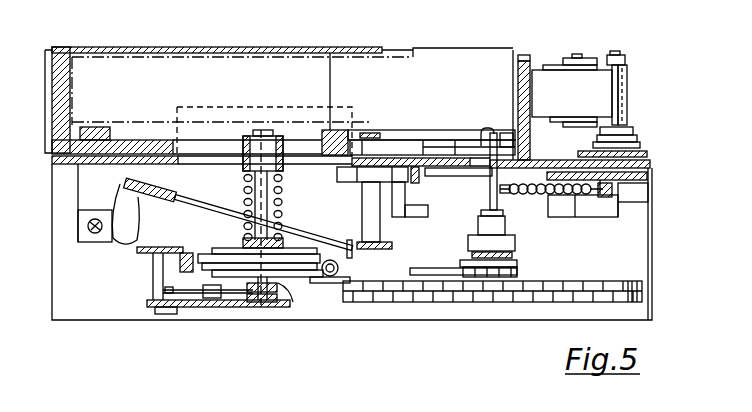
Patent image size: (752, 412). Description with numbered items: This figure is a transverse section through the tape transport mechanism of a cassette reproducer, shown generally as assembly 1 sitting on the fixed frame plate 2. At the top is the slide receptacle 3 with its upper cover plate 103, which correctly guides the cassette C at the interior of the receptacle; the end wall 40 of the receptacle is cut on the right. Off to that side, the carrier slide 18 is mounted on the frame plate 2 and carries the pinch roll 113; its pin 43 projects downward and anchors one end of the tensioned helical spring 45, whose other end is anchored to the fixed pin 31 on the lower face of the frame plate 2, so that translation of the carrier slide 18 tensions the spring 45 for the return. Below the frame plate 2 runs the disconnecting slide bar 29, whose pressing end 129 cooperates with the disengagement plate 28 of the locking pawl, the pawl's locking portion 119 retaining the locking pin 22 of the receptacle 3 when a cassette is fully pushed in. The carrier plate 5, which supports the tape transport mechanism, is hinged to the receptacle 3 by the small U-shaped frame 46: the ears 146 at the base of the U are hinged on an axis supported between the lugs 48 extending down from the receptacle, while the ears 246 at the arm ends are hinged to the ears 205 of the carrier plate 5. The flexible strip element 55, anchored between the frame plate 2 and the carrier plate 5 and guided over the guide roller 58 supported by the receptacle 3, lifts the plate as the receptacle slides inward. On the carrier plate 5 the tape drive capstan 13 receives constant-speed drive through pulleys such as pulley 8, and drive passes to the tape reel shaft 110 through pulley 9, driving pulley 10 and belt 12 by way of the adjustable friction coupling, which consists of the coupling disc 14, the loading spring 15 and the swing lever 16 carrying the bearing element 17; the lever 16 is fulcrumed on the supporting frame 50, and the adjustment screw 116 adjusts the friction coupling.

The cover 1 is at (100, 44).
The upper cover plate 103 is at (178, 46).
The slide receptacle 3 is at (44, 112).
The cassette C is at (466, 48).
The frame plate 2 is at (68, 165).
The end wall 40 is at (522, 57).
The pinch roll 113 is at (543, 80).
The carrier slide 18 is at (644, 154).
The disconnecting slide bar 29 is at (562, 172).
The tape drive capstan 13 is at (492, 138).
The locking portion 119 is at (483, 176).
The locking pin 22 is at (408, 184).
The flexible strip element 55 is at (370, 132).
The guide roller 58 is at (390, 132).
The pin 43 is at (505, 203).
The tensioned helical spring 45 is at (570, 210).
The pin 31 is at (605, 213).
The pressing end 129 is at (638, 200).
The disengagement plate 28 is at (614, 212).
The pulley 9 is at (507, 269).
The belt 12 is at (446, 275).
The pulley 8 is at (506, 303).
The tape reel shaft 110 is at (282, 190).
The loading spring 15 is at (244, 188).
The coupling disc 14 is at (222, 248).
The carrier plate 5 is at (148, 253).
The U-shaped frame 46 is at (162, 203).
The ears 246 is at (329, 244).
The lugs 48 is at (76, 212).
The ears 146 is at (118, 242).
The adjustment screw 116 is at (196, 308).
The swing lever 16 is at (233, 305).
The supporting frame 50 is at (258, 302).
The bearing element 17 is at (293, 302).
The driving pulley 10 is at (310, 285).
The ears 205 is at (330, 277).